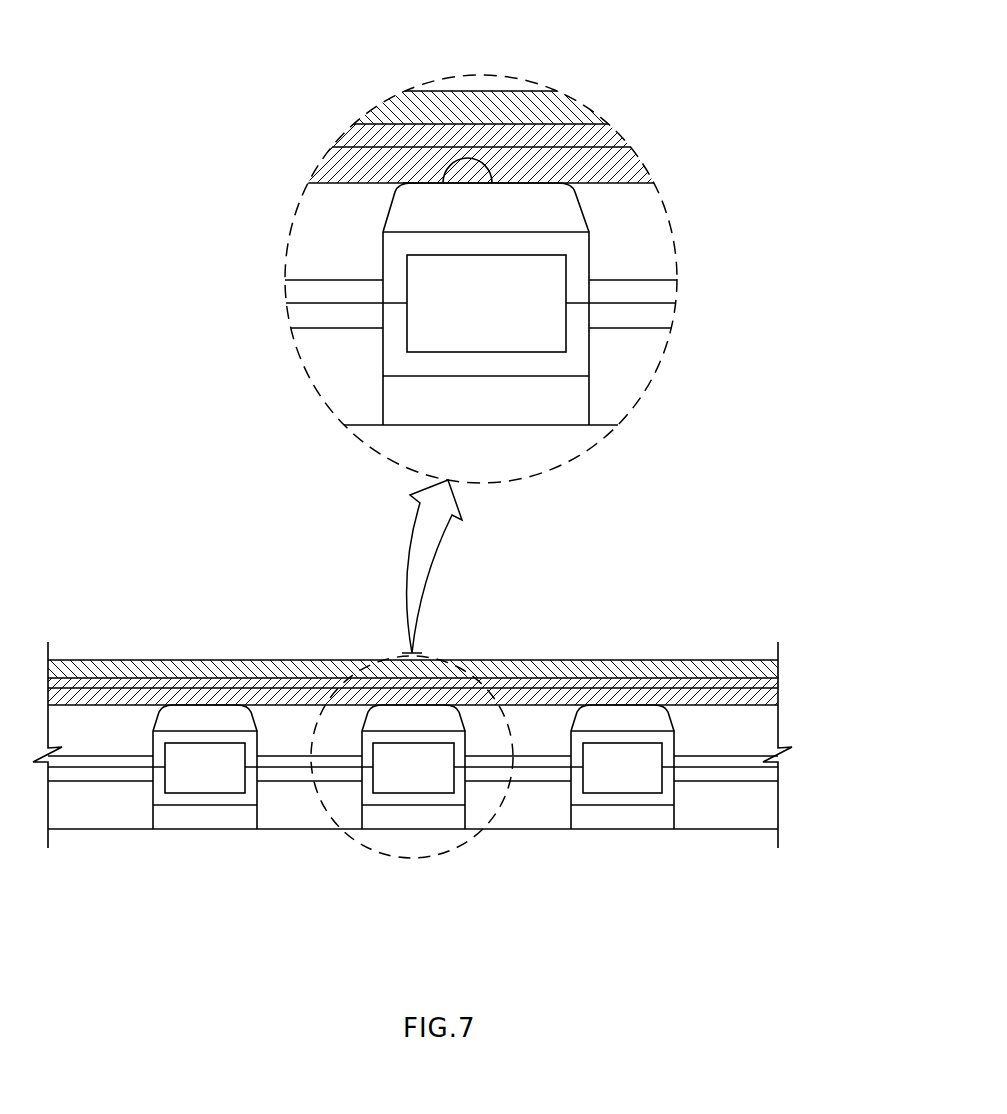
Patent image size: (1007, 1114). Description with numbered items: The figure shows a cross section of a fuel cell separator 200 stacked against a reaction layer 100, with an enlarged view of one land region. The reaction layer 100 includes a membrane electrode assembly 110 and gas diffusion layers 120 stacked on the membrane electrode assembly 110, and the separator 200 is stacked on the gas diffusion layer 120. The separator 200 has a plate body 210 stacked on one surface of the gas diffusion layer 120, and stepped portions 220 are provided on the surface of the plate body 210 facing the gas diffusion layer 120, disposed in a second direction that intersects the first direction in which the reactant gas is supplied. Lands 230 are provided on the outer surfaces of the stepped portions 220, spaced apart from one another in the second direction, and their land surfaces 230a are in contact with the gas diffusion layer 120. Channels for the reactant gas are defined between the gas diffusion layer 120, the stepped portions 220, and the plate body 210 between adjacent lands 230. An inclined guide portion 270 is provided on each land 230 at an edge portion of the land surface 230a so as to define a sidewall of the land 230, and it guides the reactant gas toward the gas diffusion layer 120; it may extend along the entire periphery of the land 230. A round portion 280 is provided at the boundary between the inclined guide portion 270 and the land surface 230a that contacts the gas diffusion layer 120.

The reaction layer 100 is at (697, 122).
The membrane electrode assembly 110 is at (608, 138).
The gas diffusion layer 120 is at (637, 167).
The separator 200 is at (677, 740).
The plate body 210 is at (667, 290).
The stepped portion 220 is at (553, 243).
The land 230 is at (520, 202).
The land surface 230a is at (492, 183).
The inclined guide portion 270 is at (392, 212).
The round portion 280 is at (410, 185).